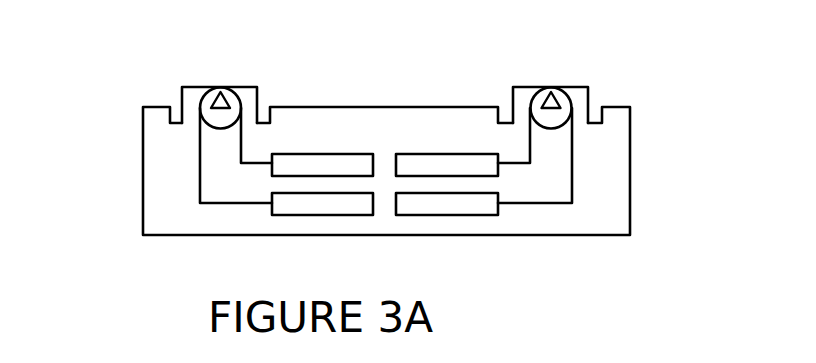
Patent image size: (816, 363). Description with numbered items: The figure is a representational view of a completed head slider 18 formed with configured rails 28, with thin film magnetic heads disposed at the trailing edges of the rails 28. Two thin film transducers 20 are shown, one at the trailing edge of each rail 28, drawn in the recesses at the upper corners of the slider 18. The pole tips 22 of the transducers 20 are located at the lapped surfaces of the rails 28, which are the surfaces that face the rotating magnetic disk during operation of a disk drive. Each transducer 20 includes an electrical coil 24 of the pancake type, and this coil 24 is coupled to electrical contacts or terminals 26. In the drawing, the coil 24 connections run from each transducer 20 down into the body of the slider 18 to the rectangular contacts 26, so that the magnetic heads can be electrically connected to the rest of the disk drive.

The slider 18 is at (112, 187).
The thin film transducer 20 is at (236, 113).
The pole tips 22 is at (552, 90).
The electrical coil 24 is at (547, 130).
The electrical contacts 26 is at (493, 208).
The rails 28 is at (197, 87).